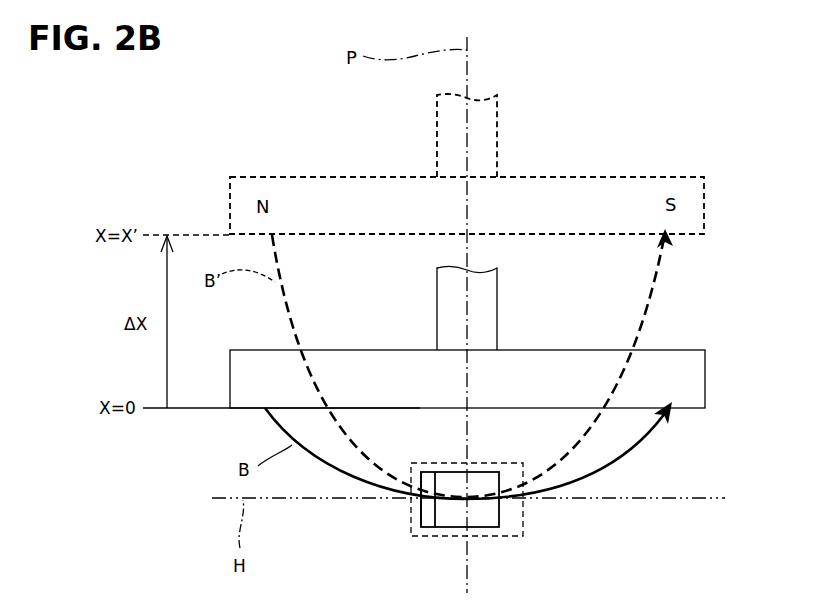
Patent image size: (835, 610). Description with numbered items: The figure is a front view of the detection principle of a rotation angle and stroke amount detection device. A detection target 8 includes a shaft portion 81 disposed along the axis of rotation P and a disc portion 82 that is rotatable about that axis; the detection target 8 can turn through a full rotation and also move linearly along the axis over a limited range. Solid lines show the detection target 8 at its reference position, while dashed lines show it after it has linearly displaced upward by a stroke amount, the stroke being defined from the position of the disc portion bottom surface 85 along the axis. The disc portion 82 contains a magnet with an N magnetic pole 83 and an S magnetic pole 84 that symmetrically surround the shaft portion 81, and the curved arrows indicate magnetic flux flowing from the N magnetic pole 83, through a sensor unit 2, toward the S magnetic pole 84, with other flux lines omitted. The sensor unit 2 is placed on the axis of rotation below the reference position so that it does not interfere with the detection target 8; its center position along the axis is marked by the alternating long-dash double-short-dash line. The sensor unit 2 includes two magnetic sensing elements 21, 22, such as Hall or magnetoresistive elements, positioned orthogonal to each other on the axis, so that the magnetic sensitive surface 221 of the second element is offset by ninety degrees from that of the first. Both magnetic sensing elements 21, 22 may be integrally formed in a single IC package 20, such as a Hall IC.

The sensor unit 2 is at (545, 540).
The IC package 20 is at (525, 508).
The magnetic sensing element 21 is at (480, 510).
The magnetic sensing element 22 is at (430, 512).
The magnetic sensitive surface 221 is at (418, 507).
The detection target 8 is at (694, 310).
The shaft portion 81 is at (483, 297).
The disc portion 82 is at (368, 375).
The N magnetic pole 83 is at (250, 378).
The S magnetic pole 84 is at (688, 376).
The disc portion bottom surface 85 is at (250, 410).